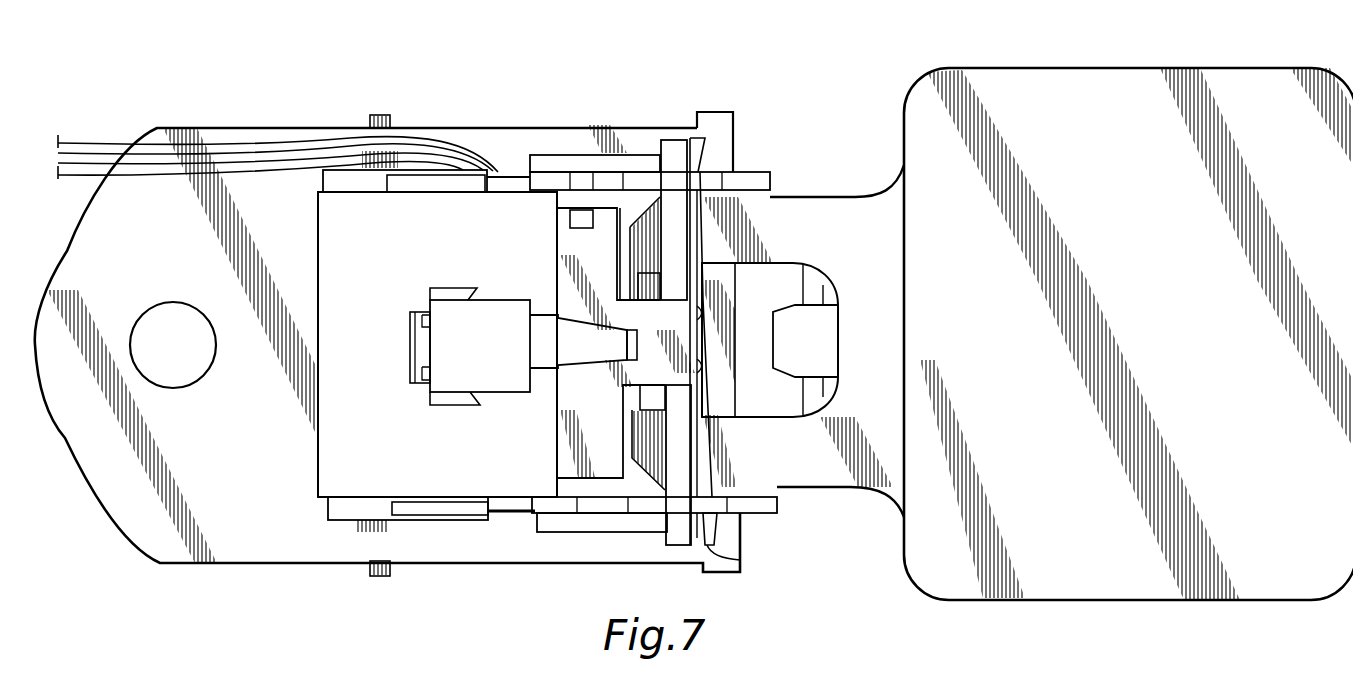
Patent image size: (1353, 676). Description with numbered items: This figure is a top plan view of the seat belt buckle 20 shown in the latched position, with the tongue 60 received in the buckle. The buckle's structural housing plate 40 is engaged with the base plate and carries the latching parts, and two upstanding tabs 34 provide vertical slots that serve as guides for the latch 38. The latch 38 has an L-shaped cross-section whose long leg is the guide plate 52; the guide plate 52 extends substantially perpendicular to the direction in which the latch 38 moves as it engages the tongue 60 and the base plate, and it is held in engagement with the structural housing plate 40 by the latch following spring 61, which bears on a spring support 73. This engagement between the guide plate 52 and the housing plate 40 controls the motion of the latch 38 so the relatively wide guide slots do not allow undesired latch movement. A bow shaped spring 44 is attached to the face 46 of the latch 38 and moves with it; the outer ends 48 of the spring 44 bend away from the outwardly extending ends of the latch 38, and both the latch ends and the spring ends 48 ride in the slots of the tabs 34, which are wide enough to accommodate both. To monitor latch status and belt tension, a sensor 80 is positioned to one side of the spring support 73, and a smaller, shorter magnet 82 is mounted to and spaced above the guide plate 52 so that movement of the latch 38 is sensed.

The seat belt buckle 20 is at (314, 207).
The upstanding tabs 34 is at (641, 172).
The latch 38 is at (653, 300).
The structural housing plate 40 is at (195, 266).
The bow shaped spring 44 is at (703, 237).
The face of the latch 46 is at (692, 213).
The outer ends of the spring 48 is at (740, 560).
The guide plate 52 is at (602, 282).
The tongue 60 is at (800, 466).
The latch following spring 61 is at (591, 359).
The spring support 73 is at (317, 443).
The sensor 80 is at (595, 216).
The magnet 82 is at (600, 210).